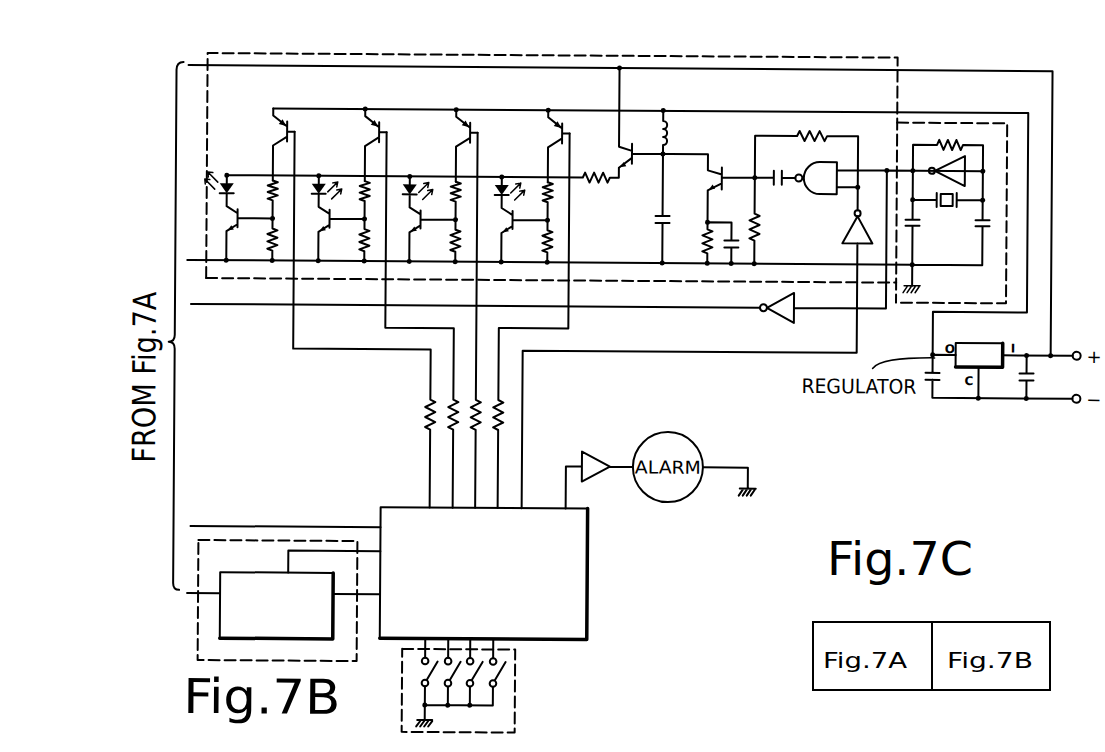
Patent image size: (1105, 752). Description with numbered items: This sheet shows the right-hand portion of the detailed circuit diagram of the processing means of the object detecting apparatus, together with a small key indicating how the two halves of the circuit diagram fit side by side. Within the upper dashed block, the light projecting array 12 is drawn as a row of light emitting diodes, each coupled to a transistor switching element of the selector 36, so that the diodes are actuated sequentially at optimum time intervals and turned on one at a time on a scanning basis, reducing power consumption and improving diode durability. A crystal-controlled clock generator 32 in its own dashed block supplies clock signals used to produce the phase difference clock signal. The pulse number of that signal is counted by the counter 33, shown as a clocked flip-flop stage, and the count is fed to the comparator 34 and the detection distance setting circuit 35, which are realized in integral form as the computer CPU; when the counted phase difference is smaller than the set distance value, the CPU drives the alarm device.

The light projecting array 12 is at (898, 85).
The clock generator 32 is at (1008, 145).
The selector 36 is at (347, 252).
The counter 33 is at (200, 640).
The comparator 34 is at (526, 573).
The detection distance setting circuit 35 is at (591, 610).